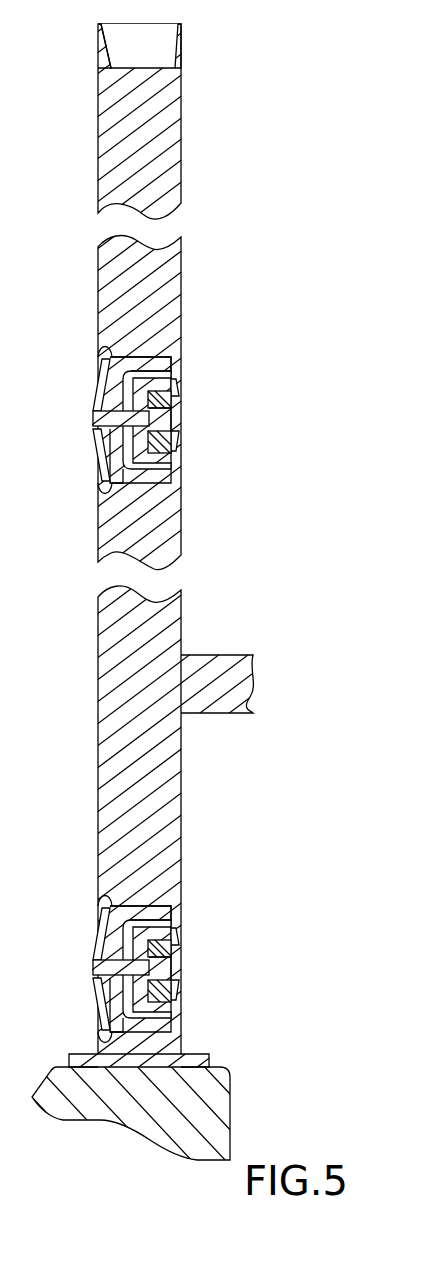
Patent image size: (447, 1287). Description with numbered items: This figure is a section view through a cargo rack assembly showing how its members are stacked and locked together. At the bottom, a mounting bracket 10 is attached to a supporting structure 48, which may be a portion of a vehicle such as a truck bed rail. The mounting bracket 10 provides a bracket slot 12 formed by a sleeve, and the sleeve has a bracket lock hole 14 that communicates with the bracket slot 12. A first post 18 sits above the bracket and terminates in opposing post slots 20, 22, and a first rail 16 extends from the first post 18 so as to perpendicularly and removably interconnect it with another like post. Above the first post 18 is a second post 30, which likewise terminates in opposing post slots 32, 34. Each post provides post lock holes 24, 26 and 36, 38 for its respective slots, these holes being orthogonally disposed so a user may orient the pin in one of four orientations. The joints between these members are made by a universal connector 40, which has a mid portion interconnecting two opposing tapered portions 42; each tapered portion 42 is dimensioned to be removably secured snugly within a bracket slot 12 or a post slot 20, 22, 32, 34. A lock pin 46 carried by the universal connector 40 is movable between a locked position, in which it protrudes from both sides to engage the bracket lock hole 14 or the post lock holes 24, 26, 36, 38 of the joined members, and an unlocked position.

The mounting bracket 10 is at (189, 1059).
The bracket slot 12 is at (99, 1054).
The bracket lock hole 14 is at (179, 1012).
The first rail 16 is at (231, 662).
The first post 18 is at (104, 712).
The post slot 20 is at (104, 894).
The post slot 22 is at (106, 500).
The post lock hole 24 is at (181, 932).
The post lock hole 26 is at (177, 462).
The second post 30 is at (106, 282).
The post slot 32 is at (104, 345).
The post slot 34 is at (106, 30).
The post lock hole 36 is at (175, 386).
The post lock hole 38 is at (177, 47).
The universal connector 40 is at (99, 412).
The tapered portion 42 is at (167, 365).
The lock pin 46 is at (176, 423).
The supporting structure 48 is at (220, 1103).